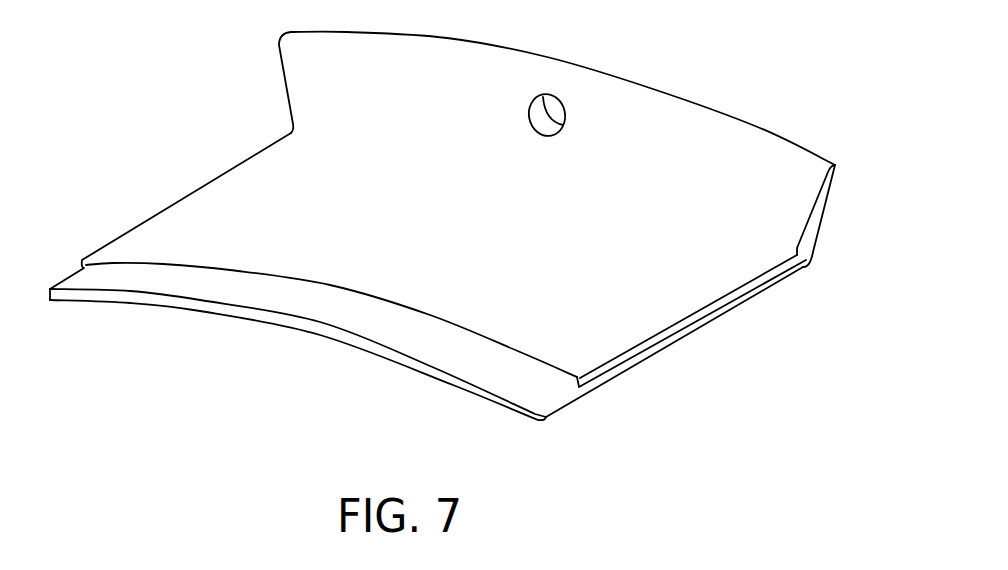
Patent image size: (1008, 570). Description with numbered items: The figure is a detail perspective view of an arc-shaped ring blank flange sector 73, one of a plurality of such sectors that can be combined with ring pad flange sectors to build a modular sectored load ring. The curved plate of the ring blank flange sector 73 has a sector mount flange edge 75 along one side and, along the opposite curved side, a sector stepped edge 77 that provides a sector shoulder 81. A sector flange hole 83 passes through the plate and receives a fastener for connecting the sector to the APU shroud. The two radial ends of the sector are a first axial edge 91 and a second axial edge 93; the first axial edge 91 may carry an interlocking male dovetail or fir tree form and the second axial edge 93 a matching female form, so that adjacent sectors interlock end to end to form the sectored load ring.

The ring blank flange sector 73 is at (278, 362).
The sector mount flange edge 75 is at (815, 218).
The sector stepped edge 77 is at (453, 383).
The sector shoulder 81 is at (203, 283).
The sector flange hole 83 is at (528, 110).
The first axial edge 91 is at (697, 330).
The second axial edge 93 is at (128, 232).